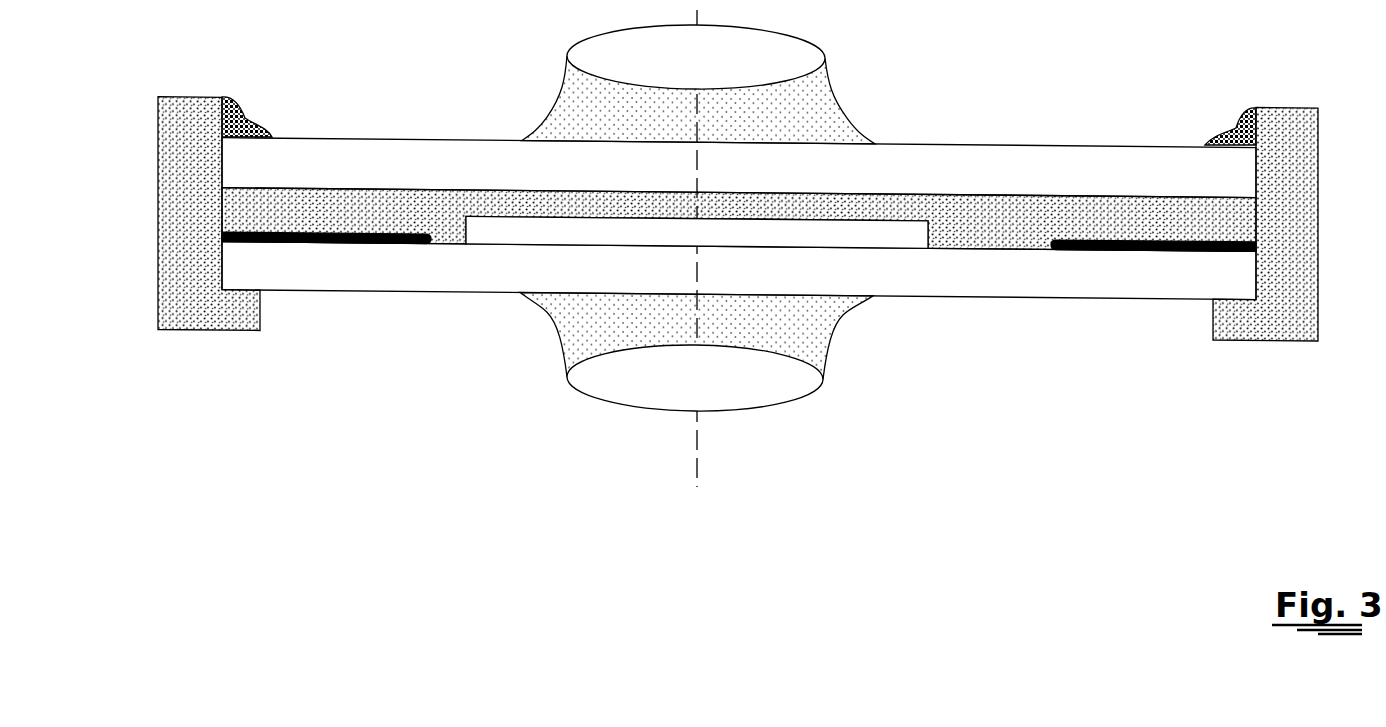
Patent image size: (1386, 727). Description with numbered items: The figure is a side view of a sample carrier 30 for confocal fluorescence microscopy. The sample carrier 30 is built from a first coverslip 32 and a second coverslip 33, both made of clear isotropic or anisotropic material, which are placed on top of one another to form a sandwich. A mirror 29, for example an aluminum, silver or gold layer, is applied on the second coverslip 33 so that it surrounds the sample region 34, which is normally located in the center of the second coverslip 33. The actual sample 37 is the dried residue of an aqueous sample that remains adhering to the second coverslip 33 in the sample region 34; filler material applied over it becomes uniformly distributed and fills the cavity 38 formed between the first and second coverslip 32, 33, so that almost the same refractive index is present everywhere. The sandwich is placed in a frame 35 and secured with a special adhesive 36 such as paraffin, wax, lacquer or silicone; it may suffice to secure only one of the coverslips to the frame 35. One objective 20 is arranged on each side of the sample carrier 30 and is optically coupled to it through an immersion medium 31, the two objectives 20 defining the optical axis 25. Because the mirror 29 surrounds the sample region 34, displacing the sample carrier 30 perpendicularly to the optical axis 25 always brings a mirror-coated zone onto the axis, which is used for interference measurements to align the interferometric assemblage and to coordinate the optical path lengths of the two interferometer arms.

The objective 20 is at (653, 65).
The optical axis 25 is at (697, 425).
The mirror 29 is at (363, 245).
The sample carrier 30 is at (1073, 80).
The immersion medium 31 is at (825, 105).
The first coverslip 32 is at (442, 152).
The second coverslip 33 is at (940, 285).
The sample region 34 is at (1002, 250).
The frame 35 is at (158, 218).
The special adhesive 36 is at (247, 122).
The actual sample 37 is at (503, 229).
The cavity 38 is at (940, 220).